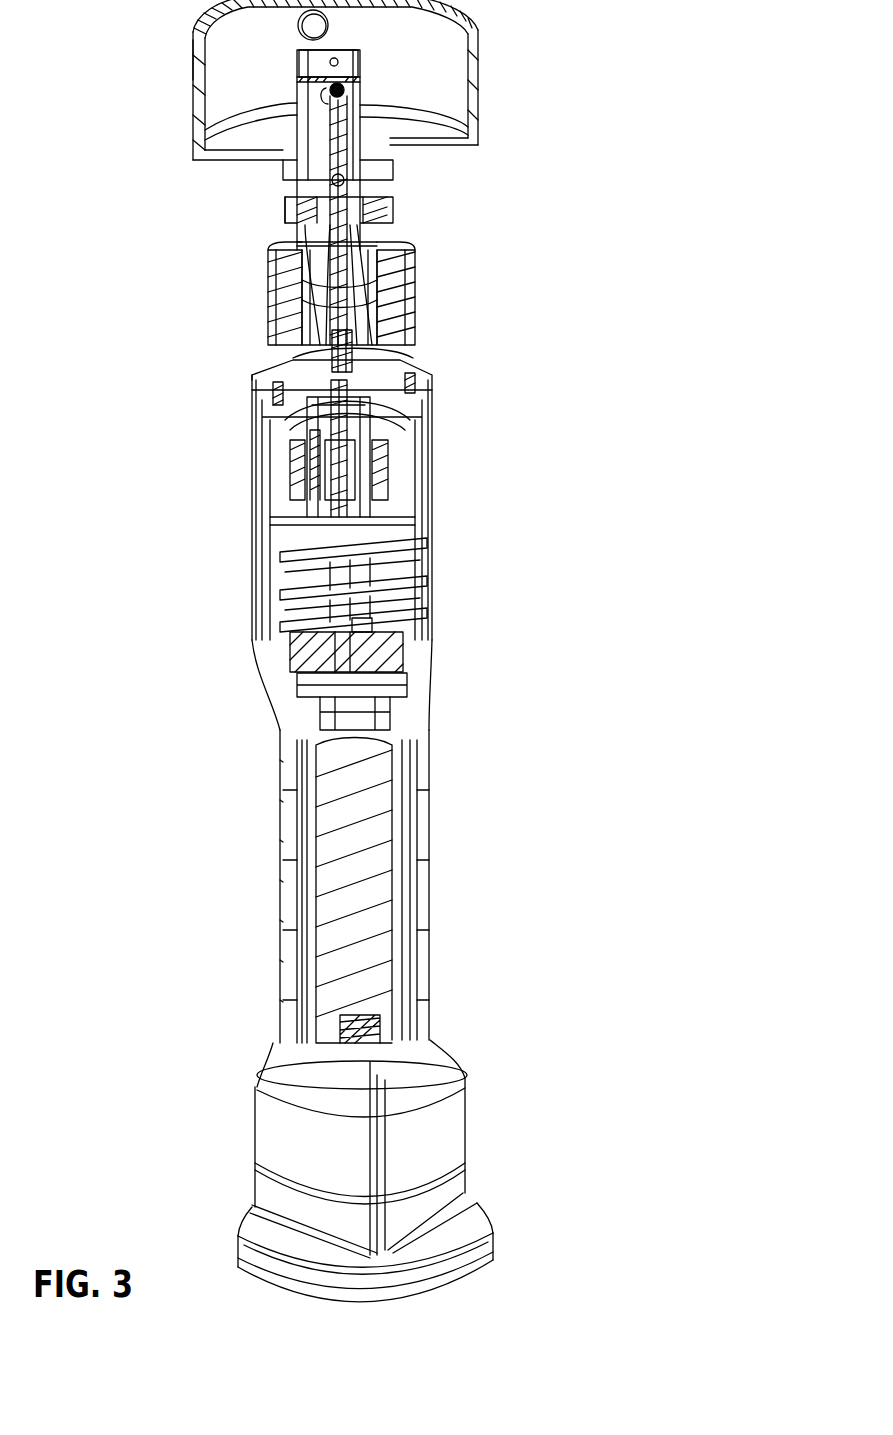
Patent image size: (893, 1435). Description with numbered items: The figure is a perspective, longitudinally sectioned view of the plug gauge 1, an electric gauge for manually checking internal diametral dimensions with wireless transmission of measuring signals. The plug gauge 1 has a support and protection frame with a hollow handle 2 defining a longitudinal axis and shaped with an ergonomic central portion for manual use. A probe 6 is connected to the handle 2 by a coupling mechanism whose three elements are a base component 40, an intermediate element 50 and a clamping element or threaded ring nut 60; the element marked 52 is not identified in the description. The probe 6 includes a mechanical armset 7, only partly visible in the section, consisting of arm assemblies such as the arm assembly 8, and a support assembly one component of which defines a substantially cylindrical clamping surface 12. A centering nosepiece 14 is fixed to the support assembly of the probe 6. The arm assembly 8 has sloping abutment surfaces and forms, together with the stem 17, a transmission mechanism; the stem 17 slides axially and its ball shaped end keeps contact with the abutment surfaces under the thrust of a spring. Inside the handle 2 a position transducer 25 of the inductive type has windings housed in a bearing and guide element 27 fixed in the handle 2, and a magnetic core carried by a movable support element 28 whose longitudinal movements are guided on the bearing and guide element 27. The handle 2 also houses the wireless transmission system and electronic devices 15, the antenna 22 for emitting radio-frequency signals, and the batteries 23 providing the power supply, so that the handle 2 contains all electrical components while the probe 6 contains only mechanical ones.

The plug gauge 1 is at (156, 347).
The hollow handle 2 is at (292, 1020).
The probe 6 is at (247, 210).
The mechanical armset 7 is at (273, 31).
The arm assembly 8 is at (347, 117).
The clamping surface 12 is at (295, 248).
The centering nosepiece 14 is at (473, 62).
The wireless transmission system and electronic devices 15 is at (385, 605).
The stem 17 is at (340, 147).
The antenna 22 is at (372, 623).
The batteries 23 is at (377, 882).
The position transducer 25 is at (307, 440).
The bearing and guide element 27 is at (365, 485).
The movable support element 28 is at (393, 440).
The base component 40 is at (392, 355).
The intermediate element 50 is at (390, 307).
The left guide block 52 is at (293, 287).
The threaded ring nut 60 is at (400, 257).